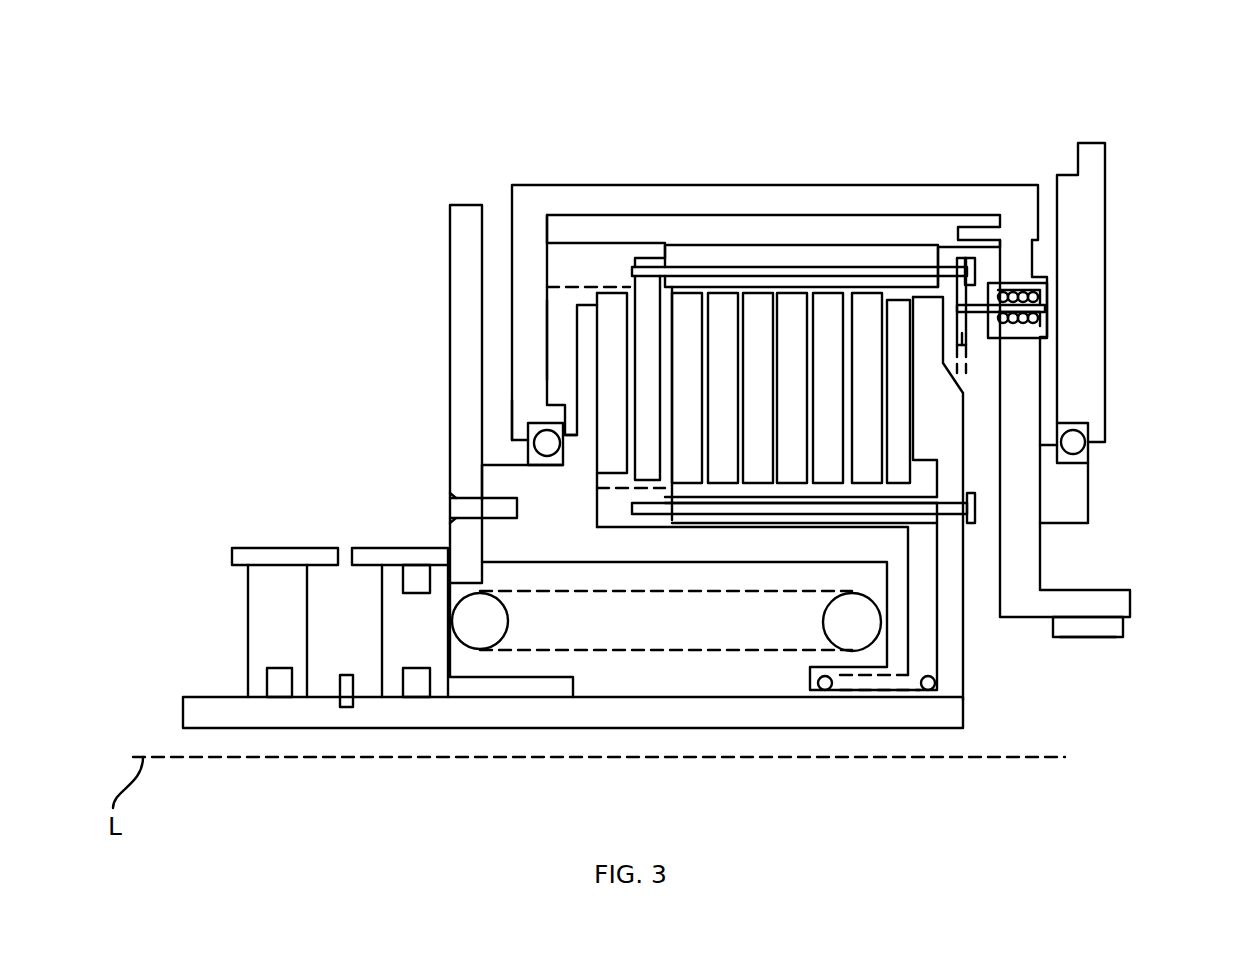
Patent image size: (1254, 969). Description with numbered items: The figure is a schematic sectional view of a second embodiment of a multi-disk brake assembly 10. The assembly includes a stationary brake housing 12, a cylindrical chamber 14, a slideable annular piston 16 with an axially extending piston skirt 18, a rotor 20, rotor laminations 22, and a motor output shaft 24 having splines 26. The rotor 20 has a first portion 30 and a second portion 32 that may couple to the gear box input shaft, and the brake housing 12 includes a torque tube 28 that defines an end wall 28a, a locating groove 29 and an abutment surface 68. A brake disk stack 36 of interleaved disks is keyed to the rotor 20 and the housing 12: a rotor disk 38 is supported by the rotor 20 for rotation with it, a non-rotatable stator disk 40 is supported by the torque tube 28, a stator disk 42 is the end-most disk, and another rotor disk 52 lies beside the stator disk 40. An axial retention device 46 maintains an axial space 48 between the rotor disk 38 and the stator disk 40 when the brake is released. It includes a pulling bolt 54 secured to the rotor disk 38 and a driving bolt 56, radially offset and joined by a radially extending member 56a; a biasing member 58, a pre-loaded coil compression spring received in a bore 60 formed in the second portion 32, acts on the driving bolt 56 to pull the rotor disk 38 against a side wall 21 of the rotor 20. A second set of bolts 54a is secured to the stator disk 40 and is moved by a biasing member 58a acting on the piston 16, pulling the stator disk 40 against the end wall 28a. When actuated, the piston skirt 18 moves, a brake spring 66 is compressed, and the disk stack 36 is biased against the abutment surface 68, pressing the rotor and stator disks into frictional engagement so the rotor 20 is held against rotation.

The multi-disk brake assembly 10 is at (325, 118).
The stationary brake housing 12 is at (458, 335).
The cylindrical chamber 14 is at (342, 623).
The slideable annular piston 16 is at (420, 650).
The axially extending piston skirt 18 is at (800, 713).
The rotor 20 is at (512, 338).
The side wall of the rotor 21 is at (675, 240).
The rotor laminations 22 is at (968, 197).
The output shaft 24 is at (1113, 605).
The splines 26 is at (1105, 632).
The torque tube 28 is at (492, 485).
The end wall of the torque tube 28a is at (745, 515).
The locating groove 29 is at (617, 515).
The first portion of the rotor 30 is at (522, 405).
The second portion of the rotor 32 is at (1027, 398).
The brake disk stack 36 is at (660, 308).
The rotor disk 38 is at (535, 442).
The stator disk 40 is at (690, 393).
The end stator disk 42 is at (613, 387).
The axial retention device 46 is at (777, 263).
The axial space 48 is at (667, 340).
The rotor disk 52 is at (722, 320).
The pulling bolt 54 is at (678, 267).
The second set of bolts 54a is at (753, 503).
The driving bolt 56 is at (1045, 305).
The radially extending member 56a is at (962, 333).
The biasing member 58 is at (1047, 295).
The biasing member 58a is at (910, 690).
The bore 60 is at (1040, 318).
The brake spring 66 is at (538, 630).
The abutment surface 68 is at (510, 297).